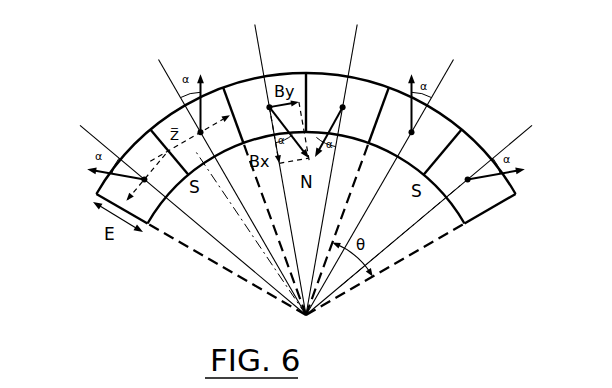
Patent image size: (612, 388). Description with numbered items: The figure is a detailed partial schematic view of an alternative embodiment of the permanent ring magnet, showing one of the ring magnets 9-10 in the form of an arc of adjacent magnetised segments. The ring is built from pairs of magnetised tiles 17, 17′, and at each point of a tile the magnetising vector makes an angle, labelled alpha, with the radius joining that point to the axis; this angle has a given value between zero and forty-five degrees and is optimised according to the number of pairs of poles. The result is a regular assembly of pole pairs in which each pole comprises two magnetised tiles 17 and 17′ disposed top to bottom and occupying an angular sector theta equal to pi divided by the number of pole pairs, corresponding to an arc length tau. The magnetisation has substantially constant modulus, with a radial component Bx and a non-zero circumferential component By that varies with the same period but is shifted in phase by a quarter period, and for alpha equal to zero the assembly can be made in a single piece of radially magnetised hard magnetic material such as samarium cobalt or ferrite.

The ring magnets 9-10 is at (499, 214).
The magnetised tile 17 is at (137, 142).
The magnetised tile 17′ is at (268, 79).